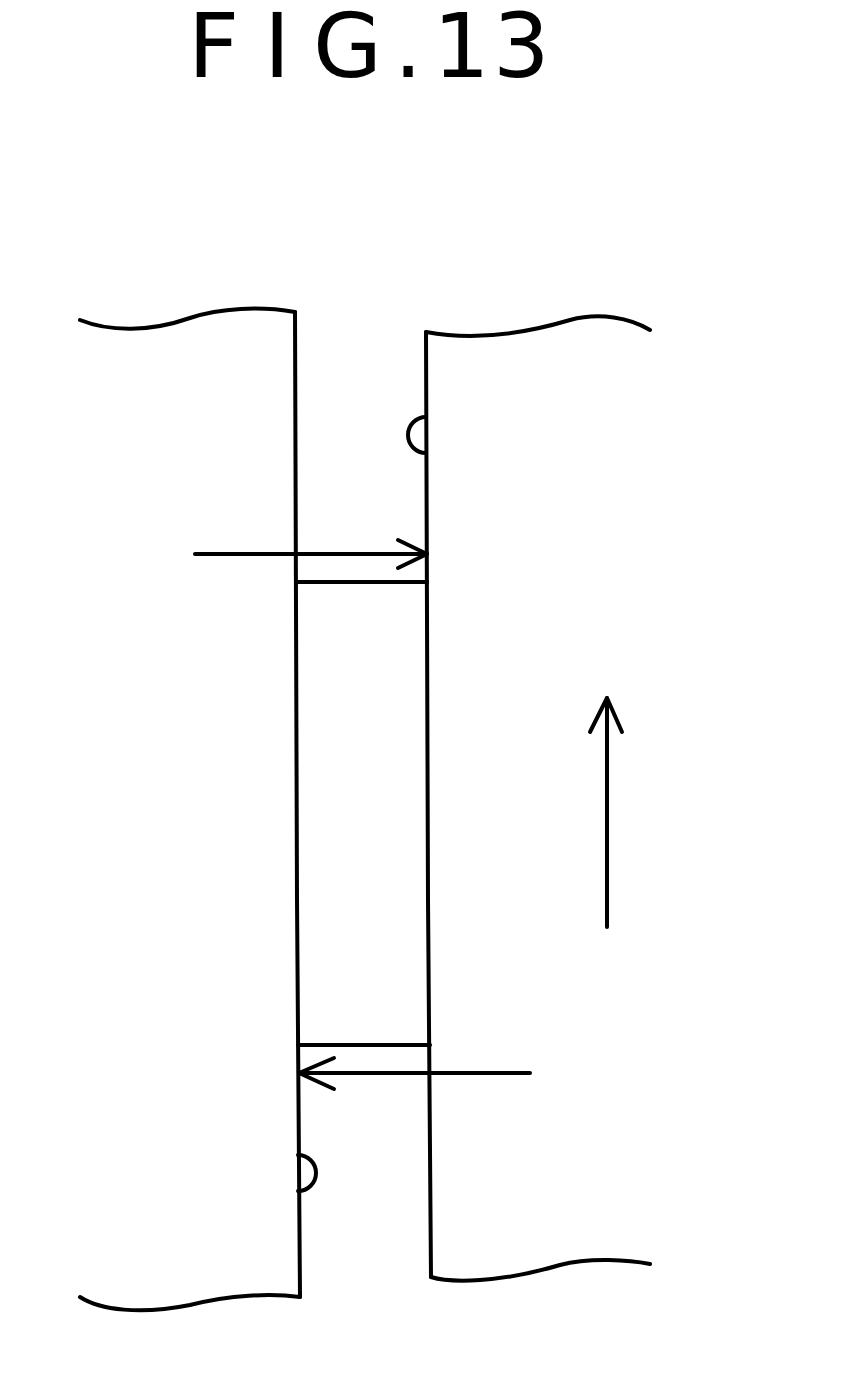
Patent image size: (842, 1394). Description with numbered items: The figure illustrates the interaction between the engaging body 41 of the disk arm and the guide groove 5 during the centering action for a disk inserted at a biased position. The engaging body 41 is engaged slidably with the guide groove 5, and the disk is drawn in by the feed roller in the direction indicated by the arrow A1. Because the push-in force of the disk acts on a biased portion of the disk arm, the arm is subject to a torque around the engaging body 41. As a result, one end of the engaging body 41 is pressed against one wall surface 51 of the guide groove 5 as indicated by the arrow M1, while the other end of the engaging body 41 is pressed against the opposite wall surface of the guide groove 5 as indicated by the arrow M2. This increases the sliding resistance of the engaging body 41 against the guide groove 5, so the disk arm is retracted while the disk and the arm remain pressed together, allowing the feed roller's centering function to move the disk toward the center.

The guide groove 5 is at (328, 415).
The engaging body 41 is at (335, 820).
The wall surface 51 is at (426, 450).
The arrow M1 is at (311, 522).
The arrow M2 is at (419, 1041).
The arrow A1 is at (600, 770).